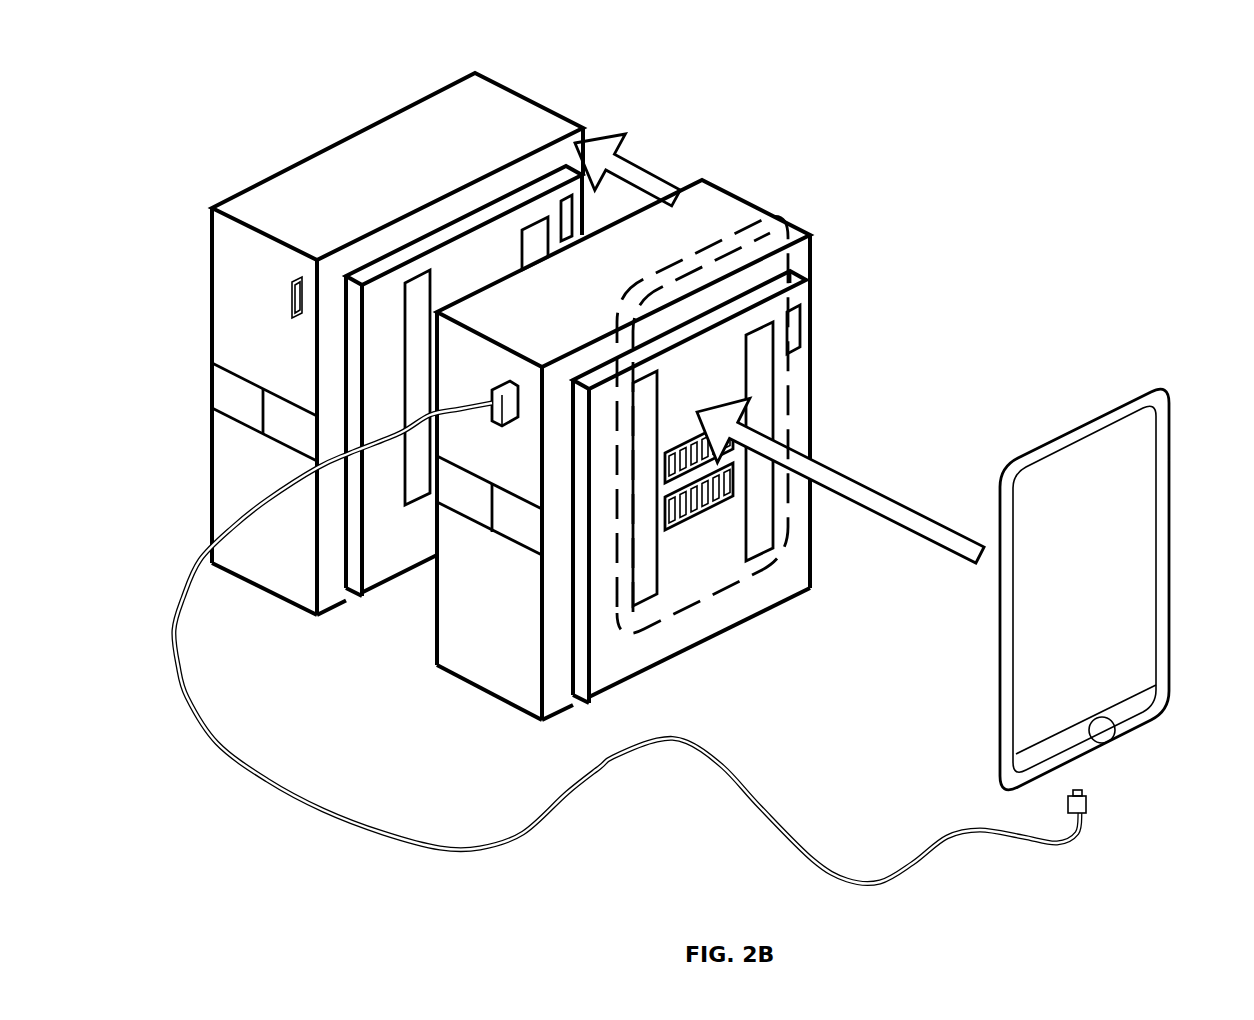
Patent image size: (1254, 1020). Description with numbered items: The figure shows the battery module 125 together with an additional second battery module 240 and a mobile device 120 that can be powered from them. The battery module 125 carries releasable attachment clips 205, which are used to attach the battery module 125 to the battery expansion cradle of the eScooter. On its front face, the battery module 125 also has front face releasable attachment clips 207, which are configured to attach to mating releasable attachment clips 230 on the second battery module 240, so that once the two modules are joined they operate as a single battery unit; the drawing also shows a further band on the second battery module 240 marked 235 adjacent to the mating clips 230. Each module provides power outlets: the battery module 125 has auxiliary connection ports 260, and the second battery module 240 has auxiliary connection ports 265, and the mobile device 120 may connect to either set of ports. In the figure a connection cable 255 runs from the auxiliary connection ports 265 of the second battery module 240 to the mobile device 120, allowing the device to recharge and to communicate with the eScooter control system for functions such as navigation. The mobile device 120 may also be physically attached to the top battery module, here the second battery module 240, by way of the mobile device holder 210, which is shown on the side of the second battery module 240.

The mobile device 120 is at (1100, 393).
The battery module 125 is at (578, 118).
The releasable attachment clips 205 is at (223, 388).
The front face releasable attachment clips 207 is at (297, 432).
The mobile device holder 210 is at (647, 580).
The mating releasable attachment clips 230 is at (472, 518).
The module housing band lower edge 235 is at (528, 553).
The second battery module 240 is at (753, 197).
The connection cable 255 is at (875, 885).
The auxiliary connection ports 260 is at (293, 282).
The auxiliary connection ports 265 is at (497, 379).